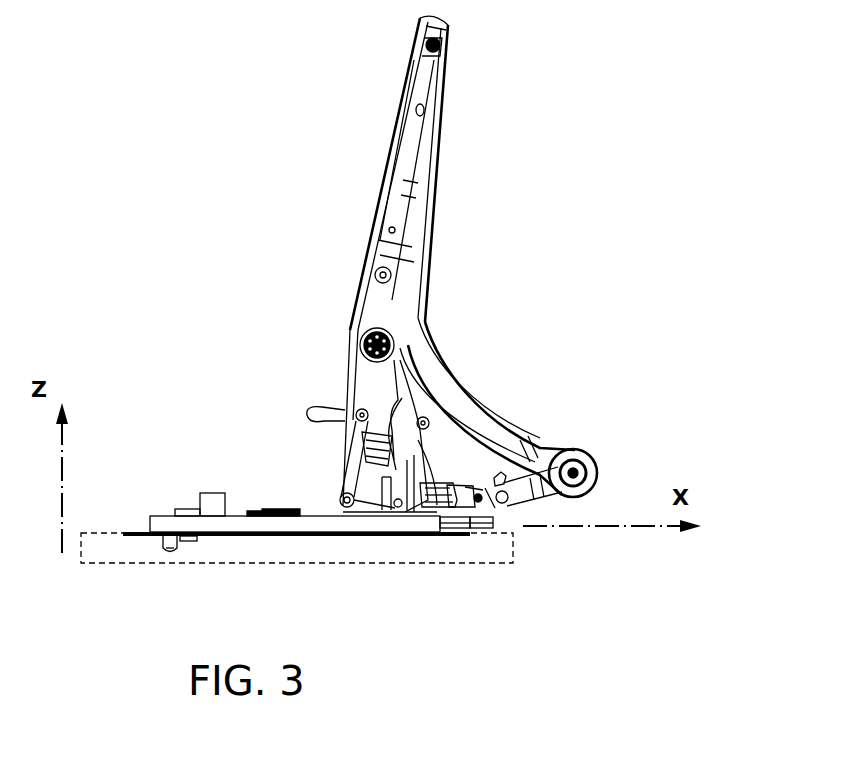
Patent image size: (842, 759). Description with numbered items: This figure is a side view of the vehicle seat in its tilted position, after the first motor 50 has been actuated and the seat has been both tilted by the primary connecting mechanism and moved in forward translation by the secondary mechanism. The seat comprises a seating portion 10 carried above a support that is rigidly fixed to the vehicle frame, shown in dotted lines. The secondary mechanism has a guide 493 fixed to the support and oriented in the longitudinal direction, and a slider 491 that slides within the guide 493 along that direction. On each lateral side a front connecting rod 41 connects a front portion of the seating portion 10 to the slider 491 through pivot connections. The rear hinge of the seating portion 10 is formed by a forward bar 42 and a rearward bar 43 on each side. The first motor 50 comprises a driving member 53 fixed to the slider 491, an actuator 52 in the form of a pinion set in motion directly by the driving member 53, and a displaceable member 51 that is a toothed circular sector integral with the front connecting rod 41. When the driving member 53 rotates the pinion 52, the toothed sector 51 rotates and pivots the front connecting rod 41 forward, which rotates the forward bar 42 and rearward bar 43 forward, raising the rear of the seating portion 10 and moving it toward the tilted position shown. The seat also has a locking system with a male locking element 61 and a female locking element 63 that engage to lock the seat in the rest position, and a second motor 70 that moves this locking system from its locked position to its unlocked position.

The seating portion 10 is at (520, 423).
The front connecting rod 41 is at (537, 503).
The forward bar 42 is at (402, 398).
The rearward bar 43 is at (345, 462).
The first motor 50 is at (440, 487).
The displaceable member 51 is at (500, 497).
The actuator 52 is at (470, 518).
The driving member 53 is at (422, 500).
The male locking element 61 is at (363, 453).
The female locking element 63 is at (187, 510).
The second motor 70 is at (213, 500).
The slider 491 is at (452, 518).
The guide 493 is at (242, 524).